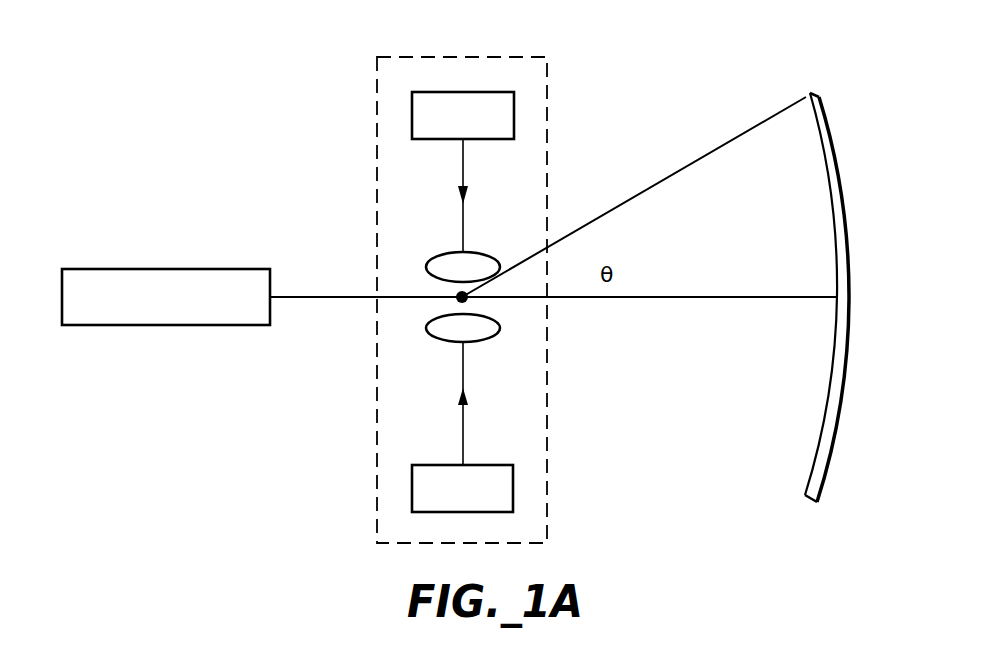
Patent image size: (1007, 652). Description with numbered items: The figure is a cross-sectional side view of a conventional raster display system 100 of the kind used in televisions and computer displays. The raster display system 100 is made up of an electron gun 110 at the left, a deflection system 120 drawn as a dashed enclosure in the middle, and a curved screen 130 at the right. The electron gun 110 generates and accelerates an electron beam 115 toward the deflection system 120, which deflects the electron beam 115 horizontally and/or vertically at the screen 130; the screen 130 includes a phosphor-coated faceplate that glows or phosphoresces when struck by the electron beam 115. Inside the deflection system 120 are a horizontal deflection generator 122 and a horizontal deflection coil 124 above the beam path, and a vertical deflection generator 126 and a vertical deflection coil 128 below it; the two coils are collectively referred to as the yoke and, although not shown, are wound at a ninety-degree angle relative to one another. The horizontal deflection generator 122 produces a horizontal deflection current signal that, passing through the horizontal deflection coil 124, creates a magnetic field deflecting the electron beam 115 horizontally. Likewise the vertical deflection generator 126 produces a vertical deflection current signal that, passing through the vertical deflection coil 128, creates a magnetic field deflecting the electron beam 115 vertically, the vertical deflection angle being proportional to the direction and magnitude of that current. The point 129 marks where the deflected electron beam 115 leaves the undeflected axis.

The raster display system 100 is at (659, 49).
The electron gun 110 is at (150, 309).
The electron beam 115 is at (302, 296).
The deflection system 120 is at (476, 57).
The horizontal deflection generator 122 is at (447, 126).
The horizontal deflection coil 124 is at (485, 255).
The vertical deflection generator 126 is at (447, 499).
The vertical deflection coil 128 is at (485, 342).
The deflection point 129 is at (458, 300).
The screen 130 is at (829, 180).